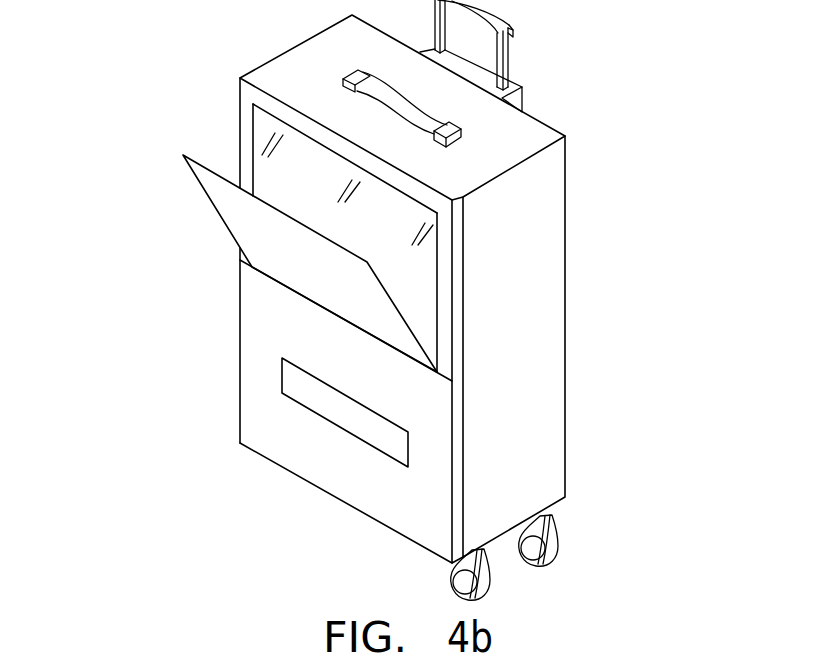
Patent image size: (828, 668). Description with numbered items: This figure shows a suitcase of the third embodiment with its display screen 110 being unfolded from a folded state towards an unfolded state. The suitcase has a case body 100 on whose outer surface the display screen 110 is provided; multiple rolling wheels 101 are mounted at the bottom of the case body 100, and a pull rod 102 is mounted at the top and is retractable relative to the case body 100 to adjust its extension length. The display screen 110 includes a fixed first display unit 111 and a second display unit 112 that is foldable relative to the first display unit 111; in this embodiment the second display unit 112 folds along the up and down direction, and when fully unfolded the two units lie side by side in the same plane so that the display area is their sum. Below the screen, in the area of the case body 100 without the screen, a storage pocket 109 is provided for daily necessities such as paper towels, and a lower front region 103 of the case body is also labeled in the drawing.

The case body 100 is at (578, 260).
The rolling wheels 101 is at (553, 531).
The pull rod 102 is at (508, 58).
The lower front panel 103 is at (257, 313).
The storage pocket 109 is at (303, 387).
The display screen 110 is at (240, 238).
The first display unit 111 is at (287, 172).
The second display unit 112 is at (255, 231).